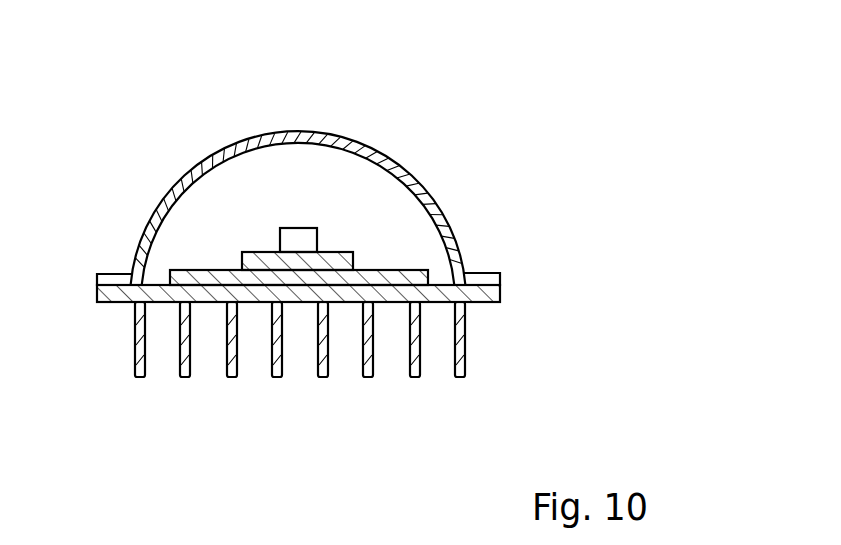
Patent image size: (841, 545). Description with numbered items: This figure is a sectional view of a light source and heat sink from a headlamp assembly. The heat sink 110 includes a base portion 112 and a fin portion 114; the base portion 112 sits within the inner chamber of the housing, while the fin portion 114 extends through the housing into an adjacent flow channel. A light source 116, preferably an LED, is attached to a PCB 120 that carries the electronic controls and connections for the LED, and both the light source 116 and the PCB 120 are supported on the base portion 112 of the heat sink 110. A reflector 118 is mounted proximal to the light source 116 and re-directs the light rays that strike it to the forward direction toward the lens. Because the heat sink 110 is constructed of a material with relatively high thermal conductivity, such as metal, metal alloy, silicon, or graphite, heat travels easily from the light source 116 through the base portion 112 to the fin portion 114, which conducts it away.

The heat sink 110 is at (500, 315).
The base portion 112 is at (468, 300).
The fin portion 114 is at (452, 365).
The light source 116 is at (305, 228).
The reflector 118 is at (410, 190).
The PCB 120 is at (253, 250).